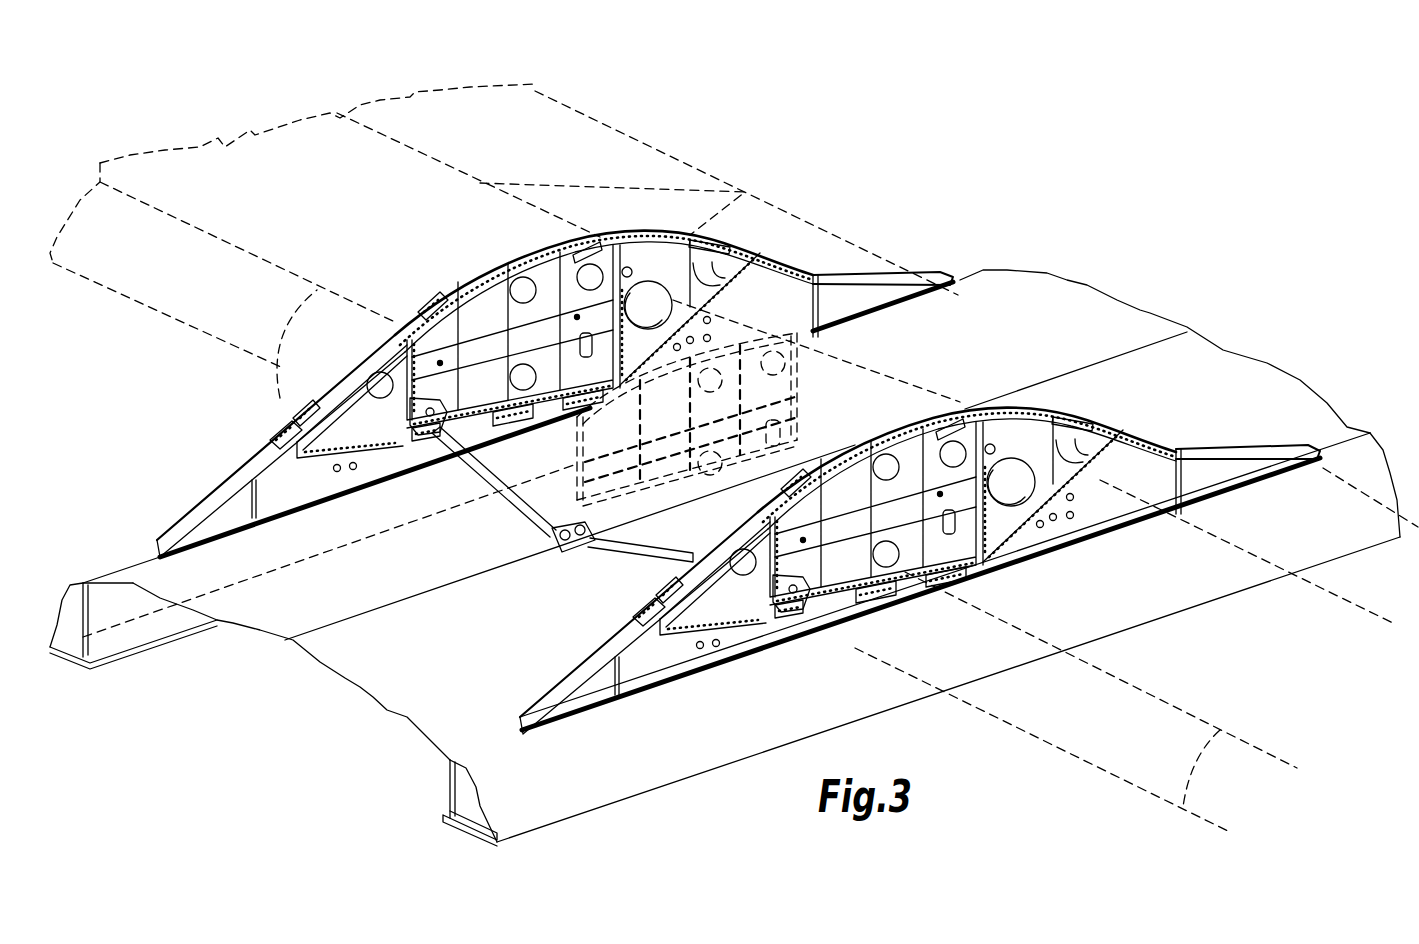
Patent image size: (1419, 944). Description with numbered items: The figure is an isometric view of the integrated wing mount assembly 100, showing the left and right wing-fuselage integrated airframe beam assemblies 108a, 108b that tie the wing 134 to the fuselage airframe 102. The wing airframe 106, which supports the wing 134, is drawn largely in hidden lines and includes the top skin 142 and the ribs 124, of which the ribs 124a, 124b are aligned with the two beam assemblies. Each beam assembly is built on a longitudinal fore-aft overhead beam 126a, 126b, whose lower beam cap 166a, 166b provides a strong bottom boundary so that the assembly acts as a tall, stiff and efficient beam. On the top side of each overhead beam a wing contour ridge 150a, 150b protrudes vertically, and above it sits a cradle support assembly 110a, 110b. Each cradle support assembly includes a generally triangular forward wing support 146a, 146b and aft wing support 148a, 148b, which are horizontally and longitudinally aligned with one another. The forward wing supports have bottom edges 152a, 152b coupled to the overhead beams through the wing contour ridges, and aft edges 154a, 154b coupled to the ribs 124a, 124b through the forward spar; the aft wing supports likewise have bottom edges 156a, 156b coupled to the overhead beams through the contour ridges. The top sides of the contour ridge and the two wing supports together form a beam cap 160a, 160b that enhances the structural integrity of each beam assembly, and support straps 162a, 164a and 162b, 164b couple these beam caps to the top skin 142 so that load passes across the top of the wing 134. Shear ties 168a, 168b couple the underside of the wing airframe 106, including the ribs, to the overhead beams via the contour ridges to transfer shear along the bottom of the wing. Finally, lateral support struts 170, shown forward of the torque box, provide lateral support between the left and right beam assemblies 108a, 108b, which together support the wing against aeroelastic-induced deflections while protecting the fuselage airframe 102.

The integrated wing mount assembly 100 is at (1000, 168).
The fuselage airframe 102 is at (586, 813).
The wing airframe 106 is at (893, 383).
The left wing-fuselage integrated airframe beam assembly 108a is at (867, 546).
The right wing-fuselage integrated airframe beam assembly 108b is at (222, 490).
The cradle support assembly 110a is at (872, 522).
The cradle support assembly 110b is at (665, 233).
The ribs 124 is at (810, 340).
The rib 124a is at (876, 498).
The rib 124b is at (480, 272).
The fore-aft overhead beam 126a is at (446, 790).
The fore-aft overhead beam 126b is at (112, 648).
The wing 134 is at (412, 93).
The top skin 142 is at (222, 140).
The forward wing support 146a is at (661, 662).
The forward wing support 146b is at (337, 420).
The aft wing support 148a is at (1058, 442).
The aft wing support 148b is at (700, 268).
The wing contour ridge 150a is at (1248, 447).
The wing contour ridge 150b is at (790, 290).
The bottom edge 152a is at (921, 594).
The bottom edge 152b is at (305, 462).
The aft edge 154a is at (715, 612).
The aft edge 154b is at (380, 330).
The bottom edge 156a is at (1057, 508).
The bottom edge 156b is at (768, 298).
The beam cap 160a is at (642, 622).
The beam cap 160b is at (340, 412).
The support strap 162a is at (729, 504).
The support strap 162b is at (422, 310).
The support strap 164a is at (969, 433).
The support strap 164b is at (600, 238).
The lower beam cap 166a is at (447, 818).
The lower beam cap 166b is at (87, 668).
The shear ties 168a is at (869, 608).
The shear ties 168b is at (515, 425).
The lateral support struts 170 is at (520, 500).